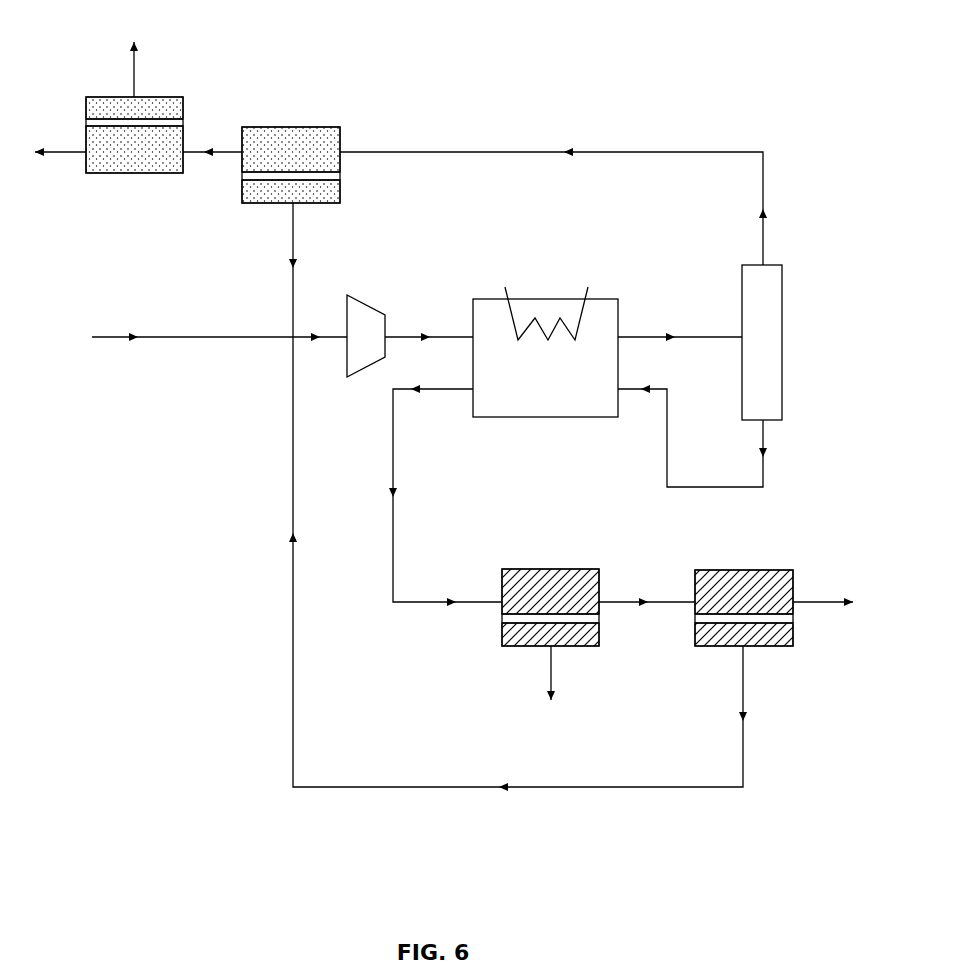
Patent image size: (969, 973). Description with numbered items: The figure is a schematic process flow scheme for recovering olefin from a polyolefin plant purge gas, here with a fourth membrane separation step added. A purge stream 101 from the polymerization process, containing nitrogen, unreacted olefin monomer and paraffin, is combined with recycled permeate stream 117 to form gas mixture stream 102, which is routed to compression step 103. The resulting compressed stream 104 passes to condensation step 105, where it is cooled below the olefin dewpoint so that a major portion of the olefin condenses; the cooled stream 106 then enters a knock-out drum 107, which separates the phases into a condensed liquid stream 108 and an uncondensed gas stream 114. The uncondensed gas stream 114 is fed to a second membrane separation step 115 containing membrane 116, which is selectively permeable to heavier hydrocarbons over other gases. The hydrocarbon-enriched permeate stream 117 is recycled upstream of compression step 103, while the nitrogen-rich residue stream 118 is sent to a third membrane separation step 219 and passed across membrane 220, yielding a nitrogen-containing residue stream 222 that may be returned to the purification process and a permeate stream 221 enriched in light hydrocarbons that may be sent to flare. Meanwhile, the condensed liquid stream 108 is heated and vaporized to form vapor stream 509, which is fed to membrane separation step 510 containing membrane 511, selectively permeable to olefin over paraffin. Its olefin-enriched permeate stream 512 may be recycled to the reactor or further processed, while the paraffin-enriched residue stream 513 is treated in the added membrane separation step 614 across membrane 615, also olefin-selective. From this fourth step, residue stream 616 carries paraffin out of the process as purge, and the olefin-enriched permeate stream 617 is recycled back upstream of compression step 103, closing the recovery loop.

The purge stream 101 is at (192, 348).
The gas mixture stream 102 is at (320, 348).
The compression step 103 is at (370, 305).
The compressed stream 104 is at (429, 349).
The condensation step 105 is at (537, 417).
The cooled stream 106 is at (680, 349).
The knock-out drum 107 is at (782, 348).
The condensed liquid stream 108 is at (711, 436).
The uncondensed gas stream 114 is at (572, 206).
The second membrane separation step 115 is at (305, 127).
The membrane 116 is at (340, 175).
The permeate stream 117 is at (272, 270).
The residue stream 118 is at (212, 162).
The third membrane separation step 219 is at (126, 173).
The membrane 220 is at (194, 122).
The permeate stream 221 is at (134, 57).
The residue stream 222 is at (56, 162).
The vapor stream 509 is at (445, 495).
The membrane separation step 510 is at (568, 569).
The membrane 511 is at (599, 620).
The permeate stream 512 is at (552, 687).
The residue stream 513 is at (647, 591).
The membrane separation step 614 is at (760, 570).
The membrane 615 is at (793, 618).
The residue stream 616 is at (843, 601).
The permeate stream 617 is at (537, 564).